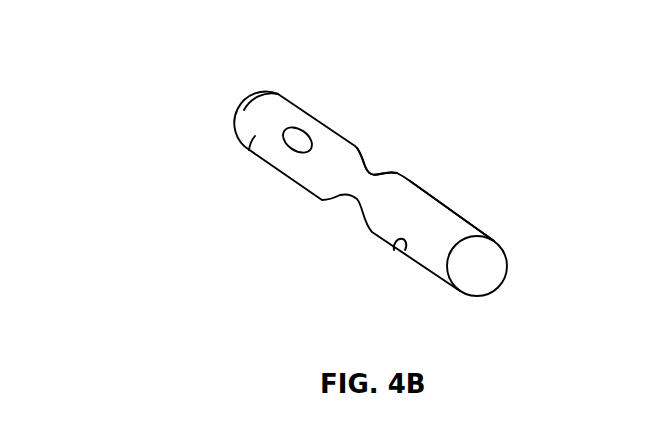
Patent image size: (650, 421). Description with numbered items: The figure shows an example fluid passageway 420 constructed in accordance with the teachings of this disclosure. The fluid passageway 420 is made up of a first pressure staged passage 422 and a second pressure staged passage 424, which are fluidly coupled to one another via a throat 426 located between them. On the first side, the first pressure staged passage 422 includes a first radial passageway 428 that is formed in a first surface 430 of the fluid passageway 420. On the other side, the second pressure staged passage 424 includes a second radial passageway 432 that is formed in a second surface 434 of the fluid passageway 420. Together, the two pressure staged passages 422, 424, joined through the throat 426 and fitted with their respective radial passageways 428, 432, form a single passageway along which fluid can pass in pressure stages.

The fluid passageway 420 is at (140, 40).
The first pressure staged passage 422 is at (250, 149).
The second pressure staged passage 424 is at (465, 221).
The throat 426 is at (370, 171).
The first radial passageway 428 is at (301, 129).
The first surface 430 is at (275, 103).
The second radial passageway 432 is at (398, 252).
The second surface 434 is at (432, 241).